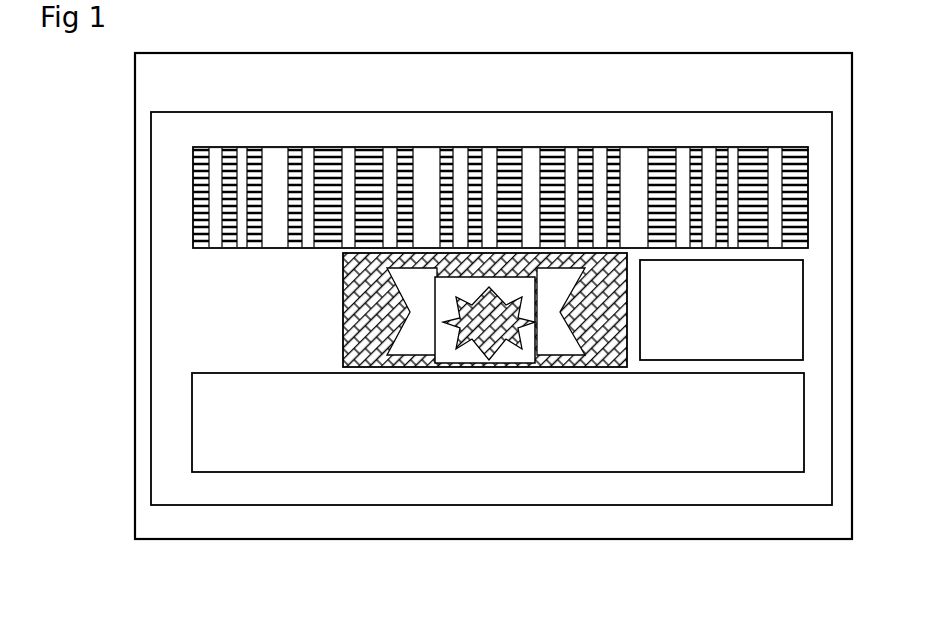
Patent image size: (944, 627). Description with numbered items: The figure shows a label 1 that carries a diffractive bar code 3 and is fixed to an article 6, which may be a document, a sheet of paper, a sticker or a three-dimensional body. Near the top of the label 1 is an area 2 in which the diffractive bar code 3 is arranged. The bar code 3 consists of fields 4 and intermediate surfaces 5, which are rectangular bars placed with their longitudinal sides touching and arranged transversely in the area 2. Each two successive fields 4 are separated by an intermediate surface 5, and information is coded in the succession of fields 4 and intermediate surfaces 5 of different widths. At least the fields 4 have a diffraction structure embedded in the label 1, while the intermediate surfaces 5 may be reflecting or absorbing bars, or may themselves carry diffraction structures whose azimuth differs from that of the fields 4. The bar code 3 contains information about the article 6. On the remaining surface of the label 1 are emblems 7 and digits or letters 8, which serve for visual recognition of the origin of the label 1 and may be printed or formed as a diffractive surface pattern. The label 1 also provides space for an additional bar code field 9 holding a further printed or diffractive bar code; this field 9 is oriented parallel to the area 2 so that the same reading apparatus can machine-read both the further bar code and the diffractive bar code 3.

The label 1 is at (172, 277).
The area with a diffractive bar code 2 is at (195, 173).
The diffractive bar code 3 is at (337, 139).
The fields 4 is at (510, 145).
The intermediate surfaces 5 is at (638, 167).
The article 6 is at (380, 104).
The emblems 7 is at (343, 302).
The digits or letters 8 is at (768, 318).
The additional bar code field 9 is at (205, 410).